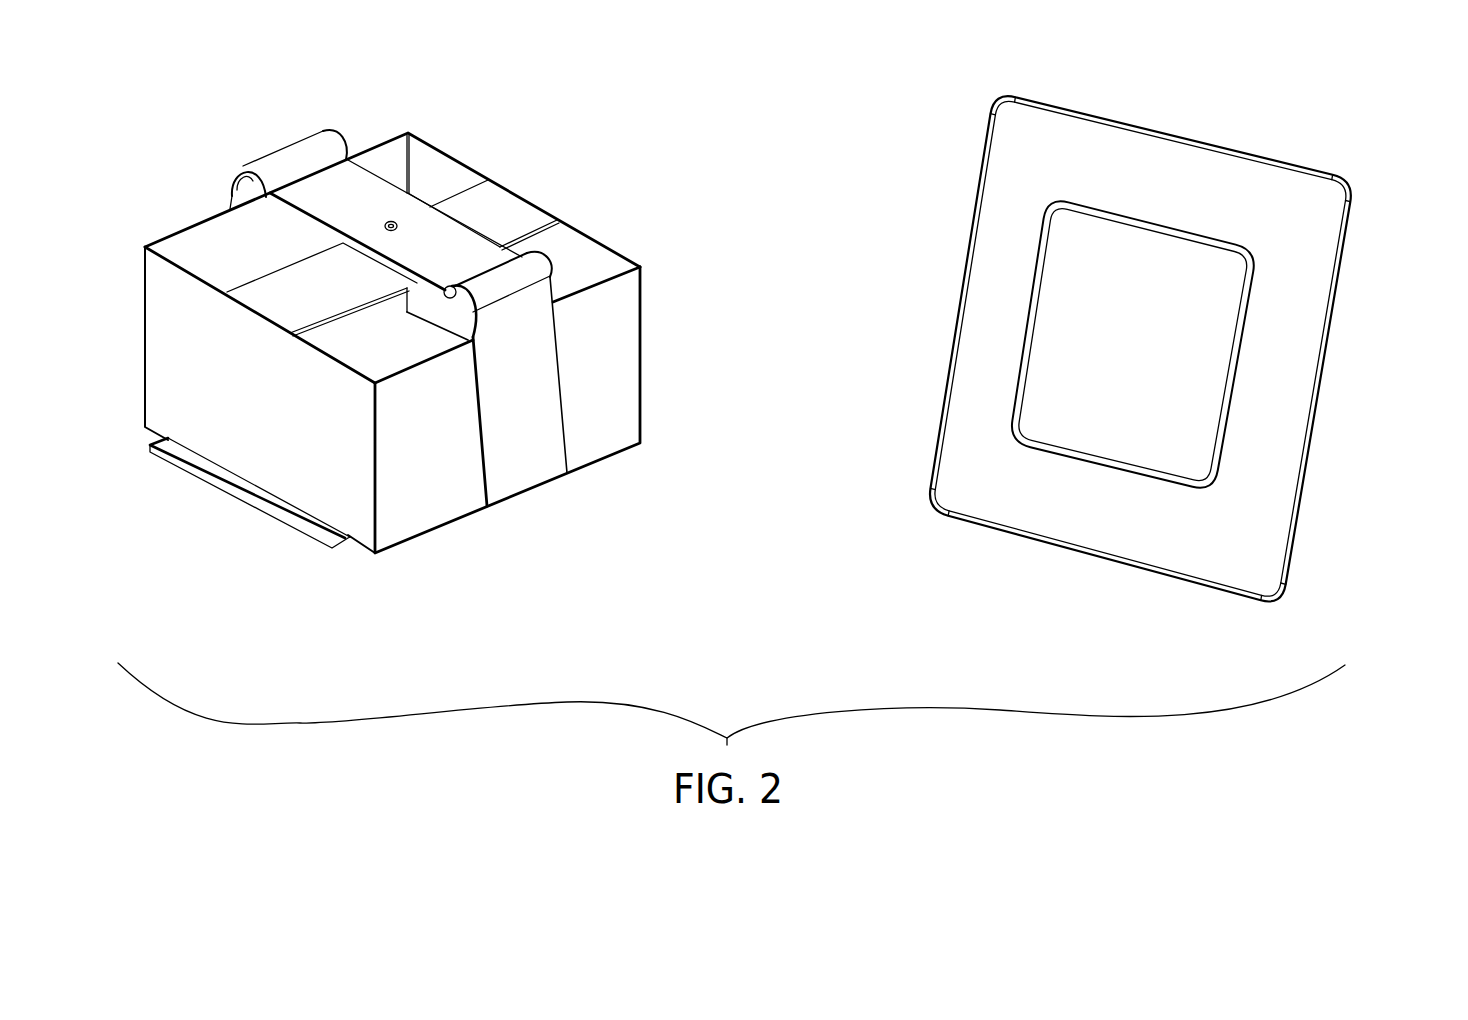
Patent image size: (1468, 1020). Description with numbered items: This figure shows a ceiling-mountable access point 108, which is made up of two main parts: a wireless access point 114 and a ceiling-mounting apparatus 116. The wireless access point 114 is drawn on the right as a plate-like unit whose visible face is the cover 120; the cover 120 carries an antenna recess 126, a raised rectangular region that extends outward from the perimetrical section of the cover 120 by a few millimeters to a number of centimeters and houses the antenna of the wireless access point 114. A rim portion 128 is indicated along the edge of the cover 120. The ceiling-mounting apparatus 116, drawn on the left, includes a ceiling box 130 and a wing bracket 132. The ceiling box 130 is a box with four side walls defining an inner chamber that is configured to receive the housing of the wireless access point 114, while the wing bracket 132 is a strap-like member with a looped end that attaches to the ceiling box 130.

The ceiling-mountable access point 108 is at (266, 113).
The wireless access point 114 is at (1323, 130).
The ceiling-mounting apparatus 116 is at (333, 573).
The cover 120 is at (1258, 457).
The antenna recess 126 is at (1092, 275).
The plate rim edge 128 is at (1010, 197).
The ceiling box 130 is at (400, 523).
The wing bracket 132 is at (307, 150).